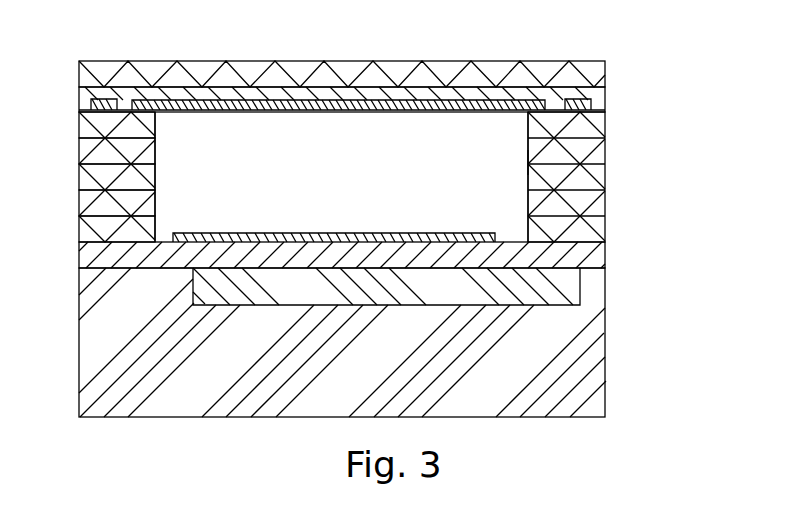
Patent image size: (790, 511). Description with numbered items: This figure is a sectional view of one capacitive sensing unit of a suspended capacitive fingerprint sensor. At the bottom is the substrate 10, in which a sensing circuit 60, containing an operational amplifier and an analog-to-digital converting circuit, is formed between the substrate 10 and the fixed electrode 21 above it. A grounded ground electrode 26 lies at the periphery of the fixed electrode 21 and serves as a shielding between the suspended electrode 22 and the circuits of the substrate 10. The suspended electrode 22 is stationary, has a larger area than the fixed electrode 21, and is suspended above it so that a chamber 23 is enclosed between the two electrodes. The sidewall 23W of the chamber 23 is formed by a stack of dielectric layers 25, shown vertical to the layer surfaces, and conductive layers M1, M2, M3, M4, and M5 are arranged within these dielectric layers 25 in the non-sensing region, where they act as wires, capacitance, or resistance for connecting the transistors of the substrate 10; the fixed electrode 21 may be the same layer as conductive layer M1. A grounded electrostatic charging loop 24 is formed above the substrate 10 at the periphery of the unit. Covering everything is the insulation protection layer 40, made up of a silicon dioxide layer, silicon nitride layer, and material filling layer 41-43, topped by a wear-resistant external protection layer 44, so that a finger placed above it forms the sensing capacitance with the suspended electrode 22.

The substrate 10 is at (598, 350).
The sensing circuit 60 is at (573, 296).
The ground electrode 26 is at (598, 255).
The dielectric layer 25 is at (337, 177).
The conductive layer M1 is at (140, 236).
The conductive layer M2 is at (125, 210).
The conductive layer M3 is at (145, 184).
The conductive layer M4 is at (140, 158).
The conductive layer M5 is at (145, 131).
The fixed electrode 21 is at (214, 233).
The suspended electrode 22 is at (441, 100).
The chamber 23 is at (330, 128).
The sidewall 23W is at (527, 160).
The electrostatic charging loop 24 is at (109, 100).
The insulation protection layer 40 is at (412, 86).
The silicon dioxide layer, silicon nitride layer, and material filling layer 41-43 is at (597, 100).
The external protection layer 44 is at (600, 75).